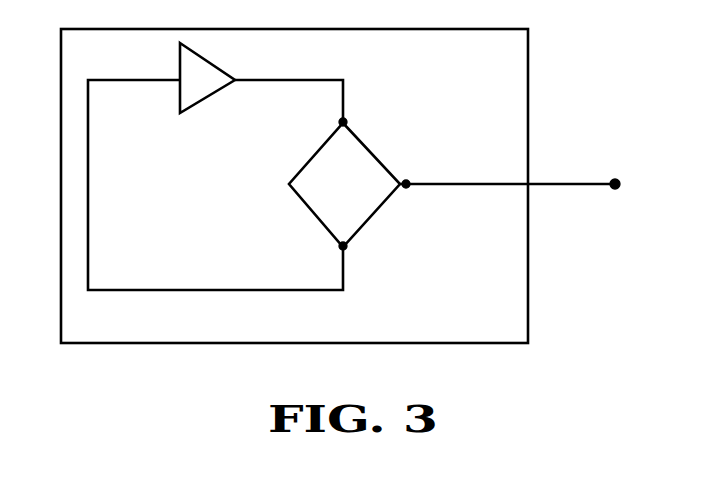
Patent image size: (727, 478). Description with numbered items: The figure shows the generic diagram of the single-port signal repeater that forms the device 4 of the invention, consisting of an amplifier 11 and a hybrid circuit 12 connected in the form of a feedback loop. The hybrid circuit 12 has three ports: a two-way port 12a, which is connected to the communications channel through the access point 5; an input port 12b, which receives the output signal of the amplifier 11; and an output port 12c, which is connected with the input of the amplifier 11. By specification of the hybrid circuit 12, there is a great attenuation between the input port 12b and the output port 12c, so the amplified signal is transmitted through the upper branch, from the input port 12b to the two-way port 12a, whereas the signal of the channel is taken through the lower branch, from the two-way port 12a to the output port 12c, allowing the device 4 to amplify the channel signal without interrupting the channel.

The device 4 is at (307, 185).
The amplifier 11 is at (207, 78).
The hybrid circuit 12 is at (344, 185).
The two-way port 12a is at (426, 172).
The input port 12b is at (318, 120).
The output port 12c is at (318, 247).
The access point 5 is at (512, 169).